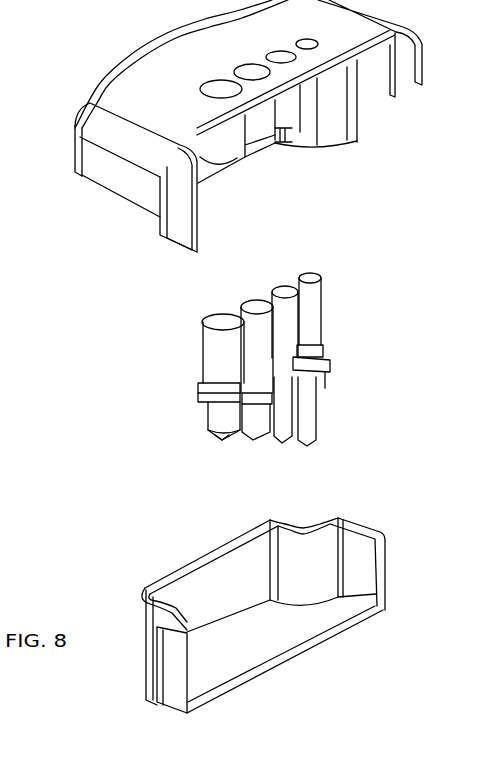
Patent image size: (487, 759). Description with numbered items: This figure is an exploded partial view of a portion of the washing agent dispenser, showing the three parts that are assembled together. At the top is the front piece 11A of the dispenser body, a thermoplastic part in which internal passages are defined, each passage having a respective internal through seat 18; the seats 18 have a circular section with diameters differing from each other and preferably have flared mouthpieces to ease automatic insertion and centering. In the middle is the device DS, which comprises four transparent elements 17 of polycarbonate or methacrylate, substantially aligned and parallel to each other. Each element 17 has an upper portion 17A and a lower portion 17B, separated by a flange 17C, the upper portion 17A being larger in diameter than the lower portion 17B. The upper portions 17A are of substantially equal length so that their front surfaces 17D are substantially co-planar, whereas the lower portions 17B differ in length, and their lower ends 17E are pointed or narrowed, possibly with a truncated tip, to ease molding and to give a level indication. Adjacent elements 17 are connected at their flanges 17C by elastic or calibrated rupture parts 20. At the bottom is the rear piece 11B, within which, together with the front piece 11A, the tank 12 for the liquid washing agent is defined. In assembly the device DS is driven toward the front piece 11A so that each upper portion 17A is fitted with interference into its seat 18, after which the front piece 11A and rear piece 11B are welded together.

The front piece 11A is at (223, 126).
The rear piece 11B is at (241, 615).
The tank 12 is at (322, 624).
The transparent element 17 is at (265, 376).
The upper portion 17A is at (216, 354).
The lower portion 17B is at (210, 420).
The flange 17C is at (202, 393).
The front surface 17D is at (215, 315).
The lower end 17E is at (220, 441).
The internal through seat 18 is at (312, 103).
The rupture part 20 is at (330, 388).
The device DS is at (228, 376).